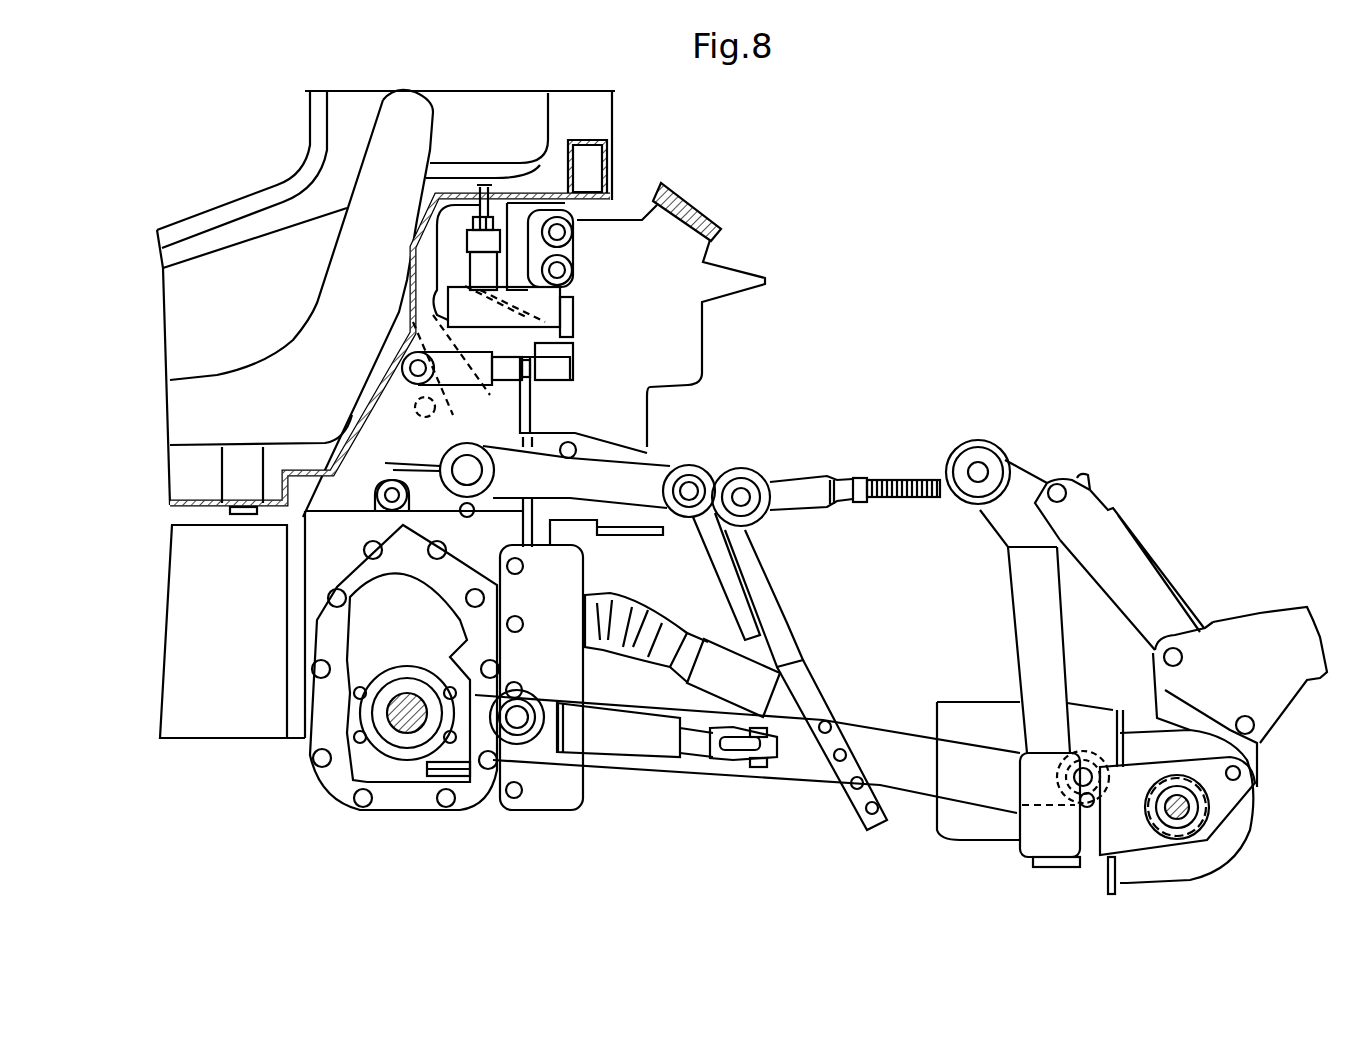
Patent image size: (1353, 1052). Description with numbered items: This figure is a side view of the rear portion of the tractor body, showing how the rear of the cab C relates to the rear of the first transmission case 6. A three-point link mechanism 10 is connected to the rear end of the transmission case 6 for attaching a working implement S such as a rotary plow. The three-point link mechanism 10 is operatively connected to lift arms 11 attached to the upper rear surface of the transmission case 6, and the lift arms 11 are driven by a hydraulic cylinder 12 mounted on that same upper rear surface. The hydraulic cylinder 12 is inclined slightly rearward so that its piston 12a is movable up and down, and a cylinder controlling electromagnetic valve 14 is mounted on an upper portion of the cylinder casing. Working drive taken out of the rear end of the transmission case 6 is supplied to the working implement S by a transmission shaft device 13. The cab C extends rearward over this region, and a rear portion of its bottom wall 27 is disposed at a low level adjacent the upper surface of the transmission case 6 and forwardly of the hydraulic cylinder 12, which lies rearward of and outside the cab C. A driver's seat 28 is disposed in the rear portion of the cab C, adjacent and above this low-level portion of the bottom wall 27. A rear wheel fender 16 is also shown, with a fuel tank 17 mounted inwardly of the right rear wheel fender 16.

The first transmission case 6 is at (332, 782).
The three-point link mechanism 10 is at (810, 788).
The lift arms 11 is at (637, 477).
The hydraulic cylinder 12 is at (537, 400).
The piston 12a is at (450, 333).
The transmission shaft device 13 is at (693, 637).
The cylinder controlling electromagnetic valve 14 is at (573, 250).
The rear wheel fender 16 is at (742, 246).
The fuel tank 17 is at (702, 340).
The bottom wall 27 is at (183, 500).
The driver's seat 28 is at (298, 340).
The cab C is at (622, 115).
The working implement S is at (1243, 612).